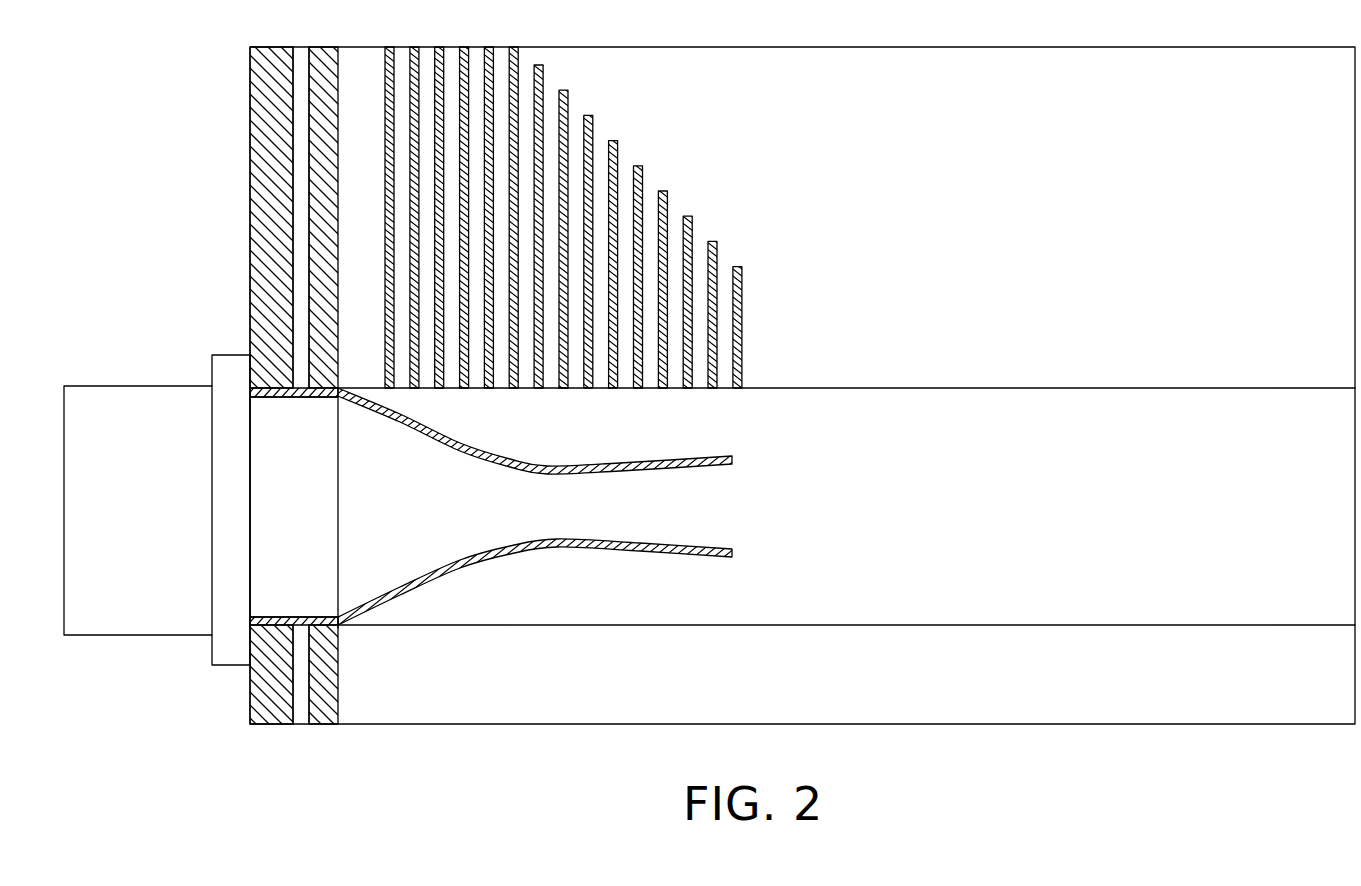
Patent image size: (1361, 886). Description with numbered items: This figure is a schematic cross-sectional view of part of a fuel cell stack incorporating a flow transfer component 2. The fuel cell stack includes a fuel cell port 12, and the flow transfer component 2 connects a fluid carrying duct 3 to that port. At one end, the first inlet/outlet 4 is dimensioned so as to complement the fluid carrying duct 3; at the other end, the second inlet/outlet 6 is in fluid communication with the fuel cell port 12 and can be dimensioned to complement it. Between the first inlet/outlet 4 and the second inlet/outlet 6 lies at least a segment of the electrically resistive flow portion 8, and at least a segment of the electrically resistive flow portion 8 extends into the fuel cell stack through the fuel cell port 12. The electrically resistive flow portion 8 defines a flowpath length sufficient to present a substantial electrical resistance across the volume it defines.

The flow transfer component 2 is at (311, 438).
The fluid carrying duct 3 is at (103, 635).
The first inlet/outlet 4 is at (222, 665).
The second inlet/outlet 6 is at (338, 560).
The electrically resistive flow portion 8 is at (572, 466).
The fuel cell port 12 is at (345, 628).